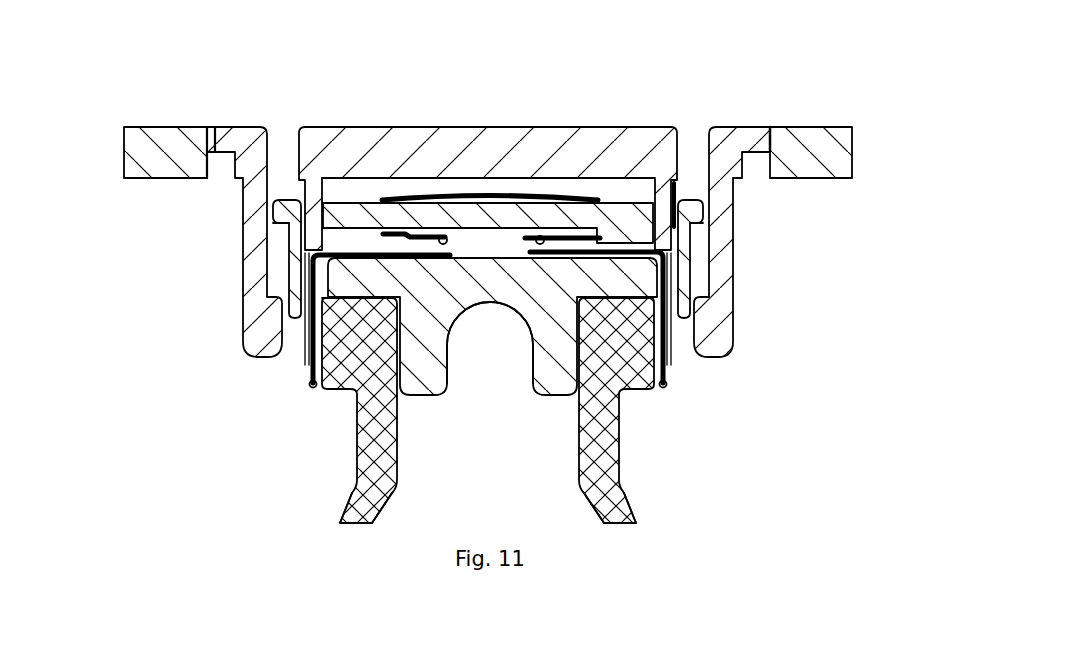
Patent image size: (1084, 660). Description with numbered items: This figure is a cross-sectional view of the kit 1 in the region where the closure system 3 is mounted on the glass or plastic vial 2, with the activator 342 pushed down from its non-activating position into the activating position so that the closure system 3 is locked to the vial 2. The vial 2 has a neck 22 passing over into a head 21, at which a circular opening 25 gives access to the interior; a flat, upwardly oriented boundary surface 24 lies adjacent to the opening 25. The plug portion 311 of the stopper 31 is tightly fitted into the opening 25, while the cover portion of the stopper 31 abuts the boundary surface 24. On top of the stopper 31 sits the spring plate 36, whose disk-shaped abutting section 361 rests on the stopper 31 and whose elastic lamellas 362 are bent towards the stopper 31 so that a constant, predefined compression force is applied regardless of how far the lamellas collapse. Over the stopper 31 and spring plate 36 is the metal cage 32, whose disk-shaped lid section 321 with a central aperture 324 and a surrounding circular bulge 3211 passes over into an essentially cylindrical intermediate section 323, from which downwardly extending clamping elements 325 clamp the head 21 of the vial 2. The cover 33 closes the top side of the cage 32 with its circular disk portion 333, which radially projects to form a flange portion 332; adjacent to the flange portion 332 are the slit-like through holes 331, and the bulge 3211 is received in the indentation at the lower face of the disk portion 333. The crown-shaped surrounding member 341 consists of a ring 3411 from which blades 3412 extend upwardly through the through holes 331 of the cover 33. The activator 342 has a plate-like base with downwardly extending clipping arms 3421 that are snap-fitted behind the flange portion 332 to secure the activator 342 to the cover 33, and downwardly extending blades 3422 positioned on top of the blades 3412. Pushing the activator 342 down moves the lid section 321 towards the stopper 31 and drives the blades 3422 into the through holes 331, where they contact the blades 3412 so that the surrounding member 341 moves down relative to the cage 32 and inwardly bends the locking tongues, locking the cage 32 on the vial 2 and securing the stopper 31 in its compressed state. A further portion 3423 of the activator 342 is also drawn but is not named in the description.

The kit 1 is at (260, 401).
The vial 2 is at (318, 463).
The closure system 3 is at (302, 88).
The head 21 is at (330, 390).
The neck 22 is at (610, 464).
The boundary surface 24 is at (325, 298).
The opening 25 is at (497, 350).
The stopper 31 is at (518, 428).
The cage 32 is at (692, 362).
The cover 33 is at (570, 182).
The spring plate 36 is at (450, 382).
The plug portion 311 is at (671, 376).
The lid section 321 is at (615, 236).
The intermediate section 323 is at (665, 282).
The central aperture 324 is at (485, 205).
The clamping elements 325 is at (306, 366).
The through holes 331 is at (676, 205).
The flange portion 332 is at (700, 210).
The disk portion 333 is at (510, 198).
The surrounding member 341 is at (687, 330).
The activator 342 is at (142, 105).
The abutting section 361 is at (404, 233).
The elastic lamellas 362 is at (399, 392).
The circular bulge 3211 is at (415, 230).
The ring 3411 is at (297, 320).
The blades 3412 is at (316, 259).
The clipping arms 3421 is at (730, 277).
The blades 3422 is at (672, 195).
The flange slot 3423 is at (136, 150).